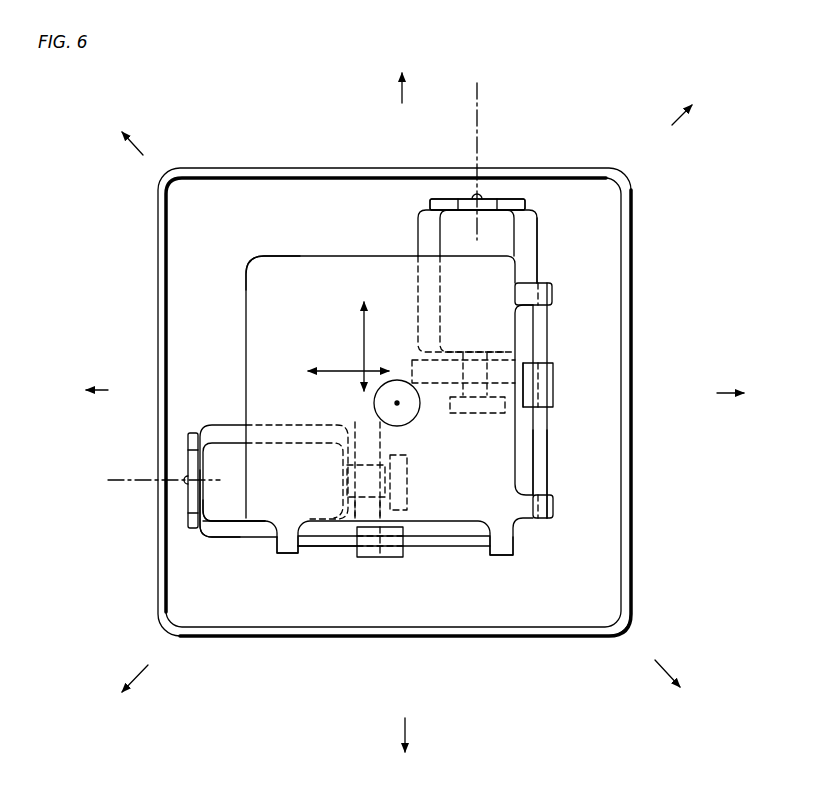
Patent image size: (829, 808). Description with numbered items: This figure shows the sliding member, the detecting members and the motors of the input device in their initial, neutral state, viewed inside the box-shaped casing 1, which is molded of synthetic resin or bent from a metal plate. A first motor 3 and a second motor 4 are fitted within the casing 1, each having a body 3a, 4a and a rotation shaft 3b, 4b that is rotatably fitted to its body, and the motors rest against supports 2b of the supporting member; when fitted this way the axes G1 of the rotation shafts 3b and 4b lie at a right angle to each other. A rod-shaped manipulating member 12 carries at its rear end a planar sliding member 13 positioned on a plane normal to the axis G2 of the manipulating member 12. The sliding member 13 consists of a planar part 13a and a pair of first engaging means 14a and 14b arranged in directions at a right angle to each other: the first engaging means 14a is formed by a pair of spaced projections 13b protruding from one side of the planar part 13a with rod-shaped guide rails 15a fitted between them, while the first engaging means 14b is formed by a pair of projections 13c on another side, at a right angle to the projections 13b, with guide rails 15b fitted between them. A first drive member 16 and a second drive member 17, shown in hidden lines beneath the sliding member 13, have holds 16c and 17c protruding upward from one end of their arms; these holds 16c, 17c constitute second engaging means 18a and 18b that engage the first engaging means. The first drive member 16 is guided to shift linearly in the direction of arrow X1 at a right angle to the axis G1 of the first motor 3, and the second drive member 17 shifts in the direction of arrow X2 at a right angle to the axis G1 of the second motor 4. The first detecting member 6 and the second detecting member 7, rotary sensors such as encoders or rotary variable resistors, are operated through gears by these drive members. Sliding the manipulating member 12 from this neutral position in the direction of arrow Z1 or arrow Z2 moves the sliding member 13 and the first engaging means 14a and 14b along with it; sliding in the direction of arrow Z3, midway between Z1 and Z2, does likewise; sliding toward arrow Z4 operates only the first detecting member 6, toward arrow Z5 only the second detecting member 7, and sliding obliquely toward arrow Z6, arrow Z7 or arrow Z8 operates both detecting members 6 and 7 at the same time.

The casing 1 is at (159, 247).
The supports 2b is at (196, 440).
The first motor 3 is at (214, 541).
The body of first motor 3a is at (246, 539).
The rotation shaft of first motor 3b is at (190, 504).
The second motor 4 is at (417, 215).
The body of second motor 4a is at (538, 237).
The rotation shaft of second motor 4b is at (472, 198).
The first detecting member 6 is at (409, 488).
The second detecting member 7 is at (486, 416).
The manipulating member 12 is at (401, 422).
The sliding member 13 is at (243, 326).
The planar part 13a is at (269, 269).
The projections 13b is at (288, 554).
The projections 13c is at (553, 293).
The first engaging means 14a is at (322, 557).
The first engaging means 14b is at (554, 322).
The guide rails 15a is at (458, 547).
The guide rails 15b is at (549, 470).
The first drive member 16 is at (351, 424).
The hold of first drive member 16c is at (378, 558).
The second drive member 17 is at (411, 355).
The hold of second drive member 17c is at (554, 391).
The second engaging means 18a is at (396, 559).
The second engaging means 18b is at (558, 367).
The axis of rotation shaft G1 is at (118, 482).
The axis of manipulating member G2 is at (398, 405).
The arrow X1 is at (360, 323).
The arrow X2 is at (330, 370).
The arrow Z1 is at (402, 750).
The arrow Z2 is at (744, 395).
The arrow Z3 is at (683, 686).
The arrow Z4 is at (398, 74).
The arrow Z5 is at (82, 390).
The arrow Z6 is at (117, 689).
The arrow Z7 is at (694, 100).
The arrow Z8 is at (122, 131).